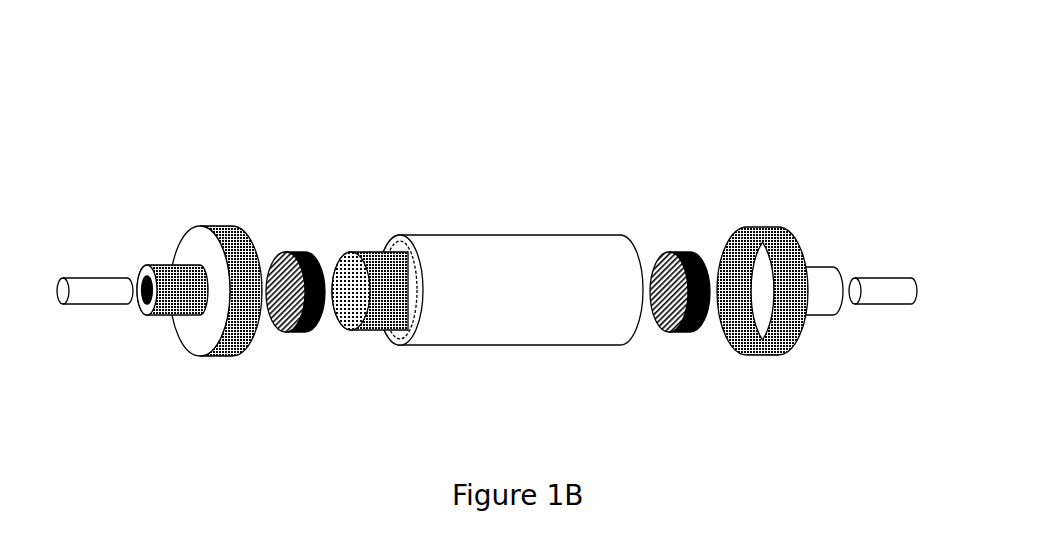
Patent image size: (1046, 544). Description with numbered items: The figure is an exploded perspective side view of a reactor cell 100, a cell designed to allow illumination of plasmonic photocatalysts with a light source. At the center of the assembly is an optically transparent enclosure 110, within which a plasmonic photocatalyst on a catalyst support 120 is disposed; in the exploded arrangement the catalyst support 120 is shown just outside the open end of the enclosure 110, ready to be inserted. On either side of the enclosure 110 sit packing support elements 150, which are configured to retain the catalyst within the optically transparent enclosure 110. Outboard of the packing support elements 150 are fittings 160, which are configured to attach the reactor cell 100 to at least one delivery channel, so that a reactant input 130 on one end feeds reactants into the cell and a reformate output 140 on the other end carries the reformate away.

The reactor cell 100 is at (208, 117).
The optically transparent enclosure 110 is at (512, 287).
The catalyst support 120 is at (352, 287).
The reactant input 130 is at (90, 287).
The reformate output 140 is at (888, 287).
The packing support element 150 is at (287, 287).
The fitting 160 is at (168, 287).